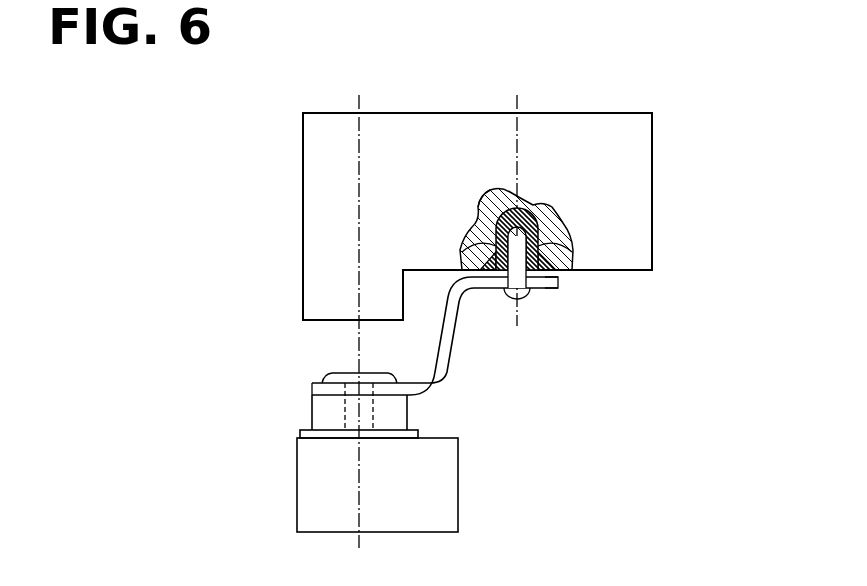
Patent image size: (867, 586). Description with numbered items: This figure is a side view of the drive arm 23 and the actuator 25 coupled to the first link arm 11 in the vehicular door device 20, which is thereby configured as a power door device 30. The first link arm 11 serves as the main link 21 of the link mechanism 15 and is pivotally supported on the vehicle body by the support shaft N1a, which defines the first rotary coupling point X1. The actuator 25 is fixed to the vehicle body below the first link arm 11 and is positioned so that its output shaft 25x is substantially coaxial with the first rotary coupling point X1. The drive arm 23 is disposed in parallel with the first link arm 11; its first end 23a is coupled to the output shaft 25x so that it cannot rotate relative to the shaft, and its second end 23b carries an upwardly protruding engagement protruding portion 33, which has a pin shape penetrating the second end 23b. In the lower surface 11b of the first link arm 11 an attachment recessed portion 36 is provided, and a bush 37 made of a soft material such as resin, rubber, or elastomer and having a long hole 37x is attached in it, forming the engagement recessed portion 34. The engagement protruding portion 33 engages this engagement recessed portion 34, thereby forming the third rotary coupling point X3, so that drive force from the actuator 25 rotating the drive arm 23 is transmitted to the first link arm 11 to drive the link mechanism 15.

The first link arm 11 is at (538, 183).
The main link 21 is at (477, 216).
The link mechanism 15 is at (617, 113).
The lower surface of the first link arm 11b is at (632, 270).
The first rotary coupling point X1 is at (268, 321).
The support shaft N1a is at (359, 175).
The third rotary coupling point X3 is at (522, 312).
The drive arm 23 is at (443, 353).
The first end of the drive arm 23a is at (318, 381).
The second end of the drive arm 23b is at (558, 280).
The actuator 25 is at (395, 463).
The output shaft 25x is at (347, 408).
The engagement protruding portion 33 is at (565, 231).
The engagement recessed portion 34 is at (561, 223).
The long hole 37x is at (528, 205).
The attachment recessed portion 36 is at (483, 192).
The bush 37 is at (462, 250).
The vehicular door device 20 is at (346, 356).
The power door device 30 is at (346, 356).